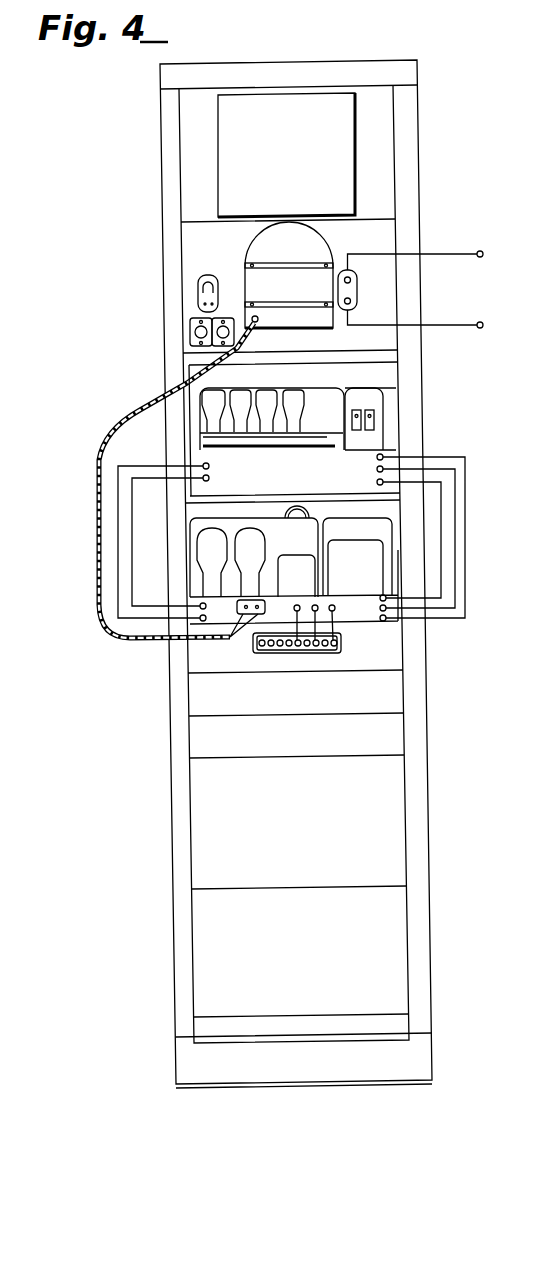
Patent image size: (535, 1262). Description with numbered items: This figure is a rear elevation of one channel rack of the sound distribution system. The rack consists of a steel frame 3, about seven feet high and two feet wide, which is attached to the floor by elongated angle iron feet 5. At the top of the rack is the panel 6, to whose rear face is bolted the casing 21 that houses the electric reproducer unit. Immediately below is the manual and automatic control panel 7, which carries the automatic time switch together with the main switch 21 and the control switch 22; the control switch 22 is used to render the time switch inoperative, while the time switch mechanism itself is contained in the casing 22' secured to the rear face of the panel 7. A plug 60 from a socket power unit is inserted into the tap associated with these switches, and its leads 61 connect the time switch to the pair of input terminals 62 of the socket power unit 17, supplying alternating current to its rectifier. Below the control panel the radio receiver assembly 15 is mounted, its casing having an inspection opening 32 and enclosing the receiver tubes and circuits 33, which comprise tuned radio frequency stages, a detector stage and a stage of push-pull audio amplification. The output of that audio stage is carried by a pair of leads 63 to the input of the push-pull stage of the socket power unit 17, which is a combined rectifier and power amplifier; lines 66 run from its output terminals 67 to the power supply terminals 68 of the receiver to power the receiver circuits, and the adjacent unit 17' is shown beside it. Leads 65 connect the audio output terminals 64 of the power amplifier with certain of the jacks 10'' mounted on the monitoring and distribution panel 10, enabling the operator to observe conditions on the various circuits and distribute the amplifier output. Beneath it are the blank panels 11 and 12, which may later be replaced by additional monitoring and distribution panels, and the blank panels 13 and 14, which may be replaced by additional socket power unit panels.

The frame 3 is at (419, 169).
The angle iron feet 5 is at (185, 1073).
The panel 6 is at (192, 133).
The manual and automatic control panel 7 is at (384, 311).
The monitoring and distribution panel 10 is at (268, 657).
The blank panel 11 is at (200, 690).
The blank panel 12 is at (200, 737).
The blank panel 13 is at (200, 815).
The blank panel 14 is at (205, 948).
The jacks 10'' is at (297, 665).
The radio receiver assembly 15 is at (380, 376).
The socket power unit 17 is at (357, 565).
The lamp panel 17' is at (229, 553).
The casing 21 is at (348, 131).
The control switch 22 is at (212, 296).
The casing 22' is at (302, 275).
The inspection opening 32 is at (372, 438).
The receiver tubes and circuits 33 is at (332, 401).
The plug 60 is at (258, 323).
The leads 61 is at (153, 404).
The input terminals 62 is at (266, 607).
The leads 63 is at (120, 548).
The audio output terminals 64 is at (313, 605).
The leads 65 is at (334, 613).
The lines 66 is at (458, 533).
The output terminals 67 is at (386, 625).
The power supply terminals 68 is at (377, 469).